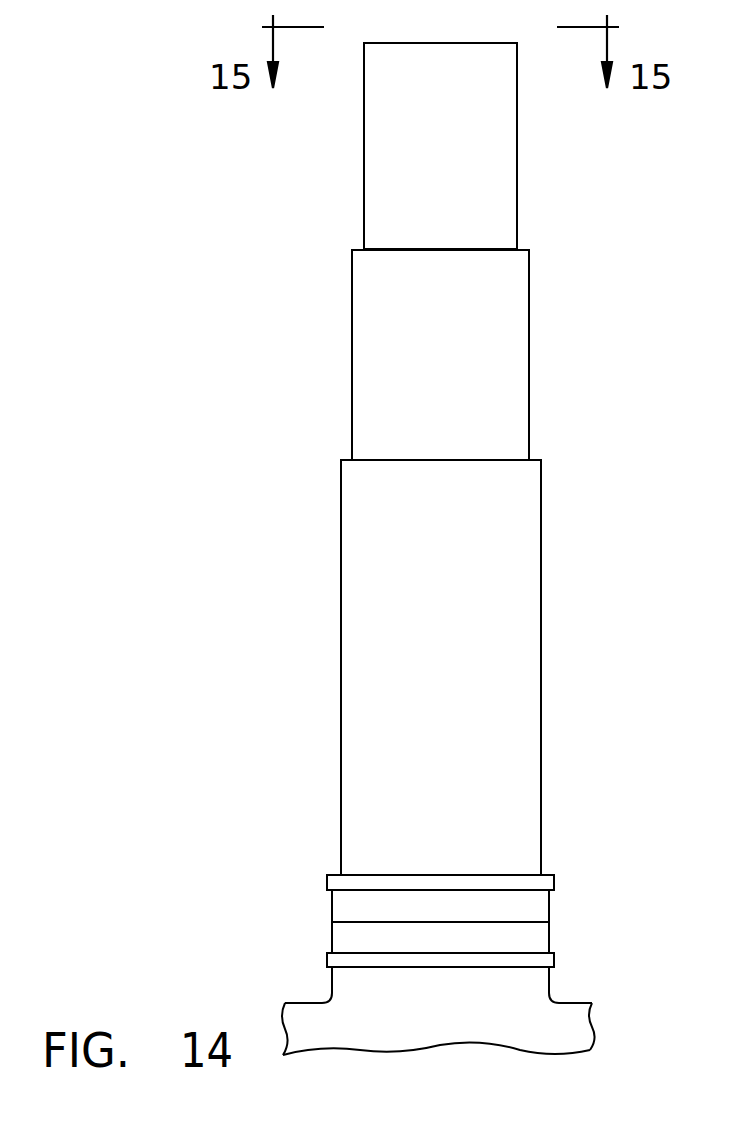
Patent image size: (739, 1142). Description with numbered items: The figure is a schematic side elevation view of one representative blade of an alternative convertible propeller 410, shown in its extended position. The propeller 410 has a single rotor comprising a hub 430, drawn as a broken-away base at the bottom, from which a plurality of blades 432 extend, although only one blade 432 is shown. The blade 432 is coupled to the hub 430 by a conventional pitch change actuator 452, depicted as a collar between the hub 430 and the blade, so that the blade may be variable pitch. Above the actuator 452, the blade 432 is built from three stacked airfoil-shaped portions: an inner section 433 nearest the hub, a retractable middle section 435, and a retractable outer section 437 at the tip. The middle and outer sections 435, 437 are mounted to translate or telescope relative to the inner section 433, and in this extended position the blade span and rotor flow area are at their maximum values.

The convertible propeller 410 is at (602, 248).
The hub 430 is at (552, 1013).
The blade 432 is at (327, 750).
The inner section 433 is at (496, 614).
The retractable middle section 435 is at (478, 348).
The retractable outer section 437 is at (480, 173).
The pitch change actuator 452 is at (527, 908).